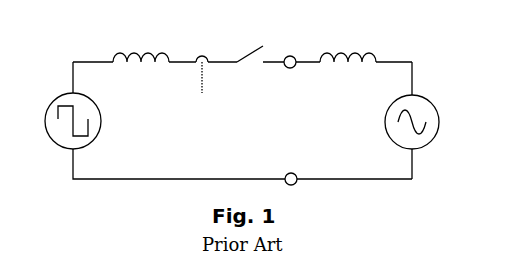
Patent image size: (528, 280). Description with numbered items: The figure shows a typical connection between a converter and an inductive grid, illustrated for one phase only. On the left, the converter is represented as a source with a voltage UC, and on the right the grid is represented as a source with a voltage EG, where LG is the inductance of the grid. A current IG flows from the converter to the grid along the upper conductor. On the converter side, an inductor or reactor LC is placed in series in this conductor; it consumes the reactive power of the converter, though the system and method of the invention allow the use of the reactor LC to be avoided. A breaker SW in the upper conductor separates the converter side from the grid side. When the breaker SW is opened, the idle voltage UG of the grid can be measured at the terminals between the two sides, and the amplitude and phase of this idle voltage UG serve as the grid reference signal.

The inductor (reactor) LC is at (141, 40).
The grid current IG is at (182, 39).
The breaker SW is at (231, 69).
The grid inductance LG is at (348, 40).
The converter voltage UC is at (87, 118).
The idle voltage of the grid UG is at (295, 120).
The grid voltage EG is at (425, 118).